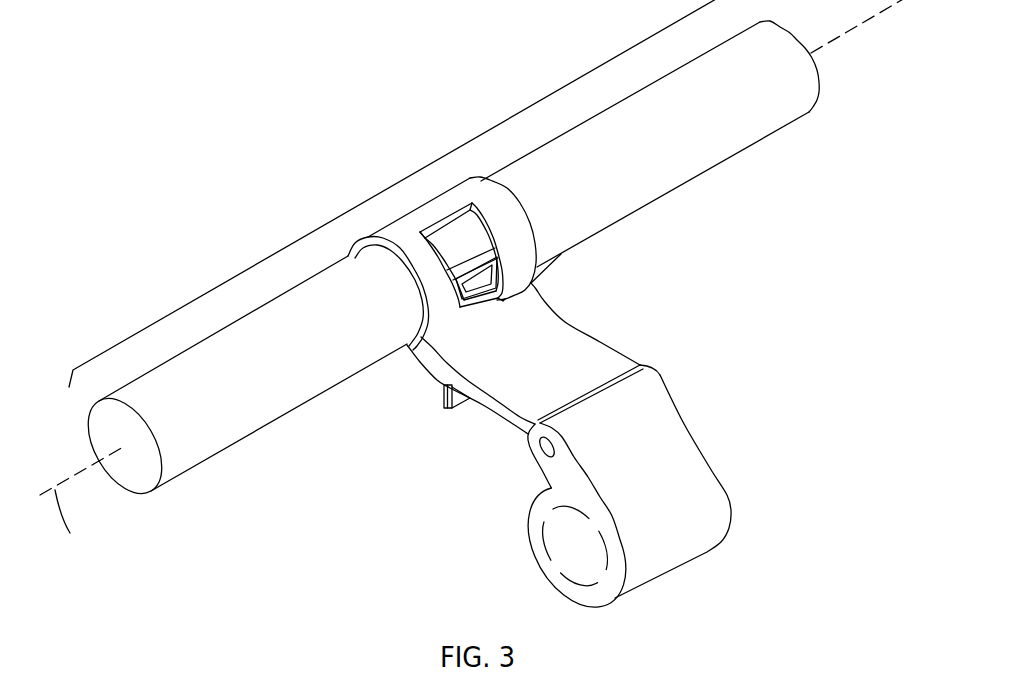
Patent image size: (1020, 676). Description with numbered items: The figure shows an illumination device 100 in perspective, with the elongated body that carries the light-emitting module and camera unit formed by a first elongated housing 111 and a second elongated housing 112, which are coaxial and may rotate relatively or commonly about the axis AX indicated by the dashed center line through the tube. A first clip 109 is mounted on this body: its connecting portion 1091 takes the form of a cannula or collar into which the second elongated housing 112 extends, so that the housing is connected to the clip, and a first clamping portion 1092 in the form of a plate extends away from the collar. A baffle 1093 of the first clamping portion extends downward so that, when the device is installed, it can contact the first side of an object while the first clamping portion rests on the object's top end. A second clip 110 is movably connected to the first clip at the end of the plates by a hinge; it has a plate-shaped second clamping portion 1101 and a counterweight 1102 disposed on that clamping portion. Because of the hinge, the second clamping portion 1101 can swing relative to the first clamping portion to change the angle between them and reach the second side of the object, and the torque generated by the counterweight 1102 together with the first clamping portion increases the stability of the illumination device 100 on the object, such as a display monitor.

The illumination device 100 is at (167, 177).
The first elongated housing 111 is at (396, 193).
The second elongated housing 112 is at (396, 193).
The first clip 109 is at (554, 359).
The connecting portion 1091 is at (515, 233).
The first clamping portion 1092 is at (560, 337).
The baffle 1093 is at (443, 394).
The second clip 110 is at (537, 486).
The second clamping portion 1101 is at (528, 508).
The counterweight 1102 is at (557, 565).